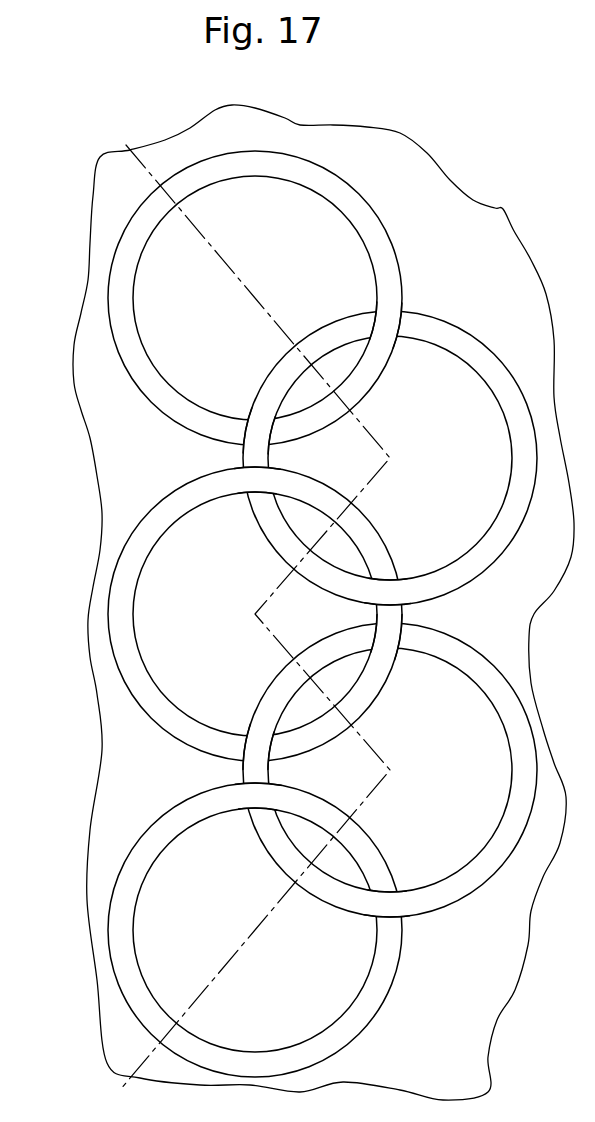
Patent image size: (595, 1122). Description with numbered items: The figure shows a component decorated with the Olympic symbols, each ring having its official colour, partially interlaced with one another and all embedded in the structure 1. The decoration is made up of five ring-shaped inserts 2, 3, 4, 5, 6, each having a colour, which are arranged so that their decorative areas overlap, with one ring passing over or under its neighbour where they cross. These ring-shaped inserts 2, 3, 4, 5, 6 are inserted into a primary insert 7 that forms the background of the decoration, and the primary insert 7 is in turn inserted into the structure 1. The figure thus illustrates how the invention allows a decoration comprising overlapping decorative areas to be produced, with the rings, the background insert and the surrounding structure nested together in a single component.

The structure 1 is at (120, 1033).
The ring-shaped insert 2 is at (128, 903).
The ring-shaped insert 3 is at (252, 773).
The ring-shaped insert 4 is at (123, 601).
The ring-shaped insert 5 is at (253, 450).
The ring-shaped insert 6 is at (123, 287).
The primary insert 7 is at (342, 252).